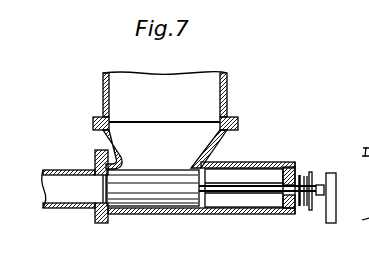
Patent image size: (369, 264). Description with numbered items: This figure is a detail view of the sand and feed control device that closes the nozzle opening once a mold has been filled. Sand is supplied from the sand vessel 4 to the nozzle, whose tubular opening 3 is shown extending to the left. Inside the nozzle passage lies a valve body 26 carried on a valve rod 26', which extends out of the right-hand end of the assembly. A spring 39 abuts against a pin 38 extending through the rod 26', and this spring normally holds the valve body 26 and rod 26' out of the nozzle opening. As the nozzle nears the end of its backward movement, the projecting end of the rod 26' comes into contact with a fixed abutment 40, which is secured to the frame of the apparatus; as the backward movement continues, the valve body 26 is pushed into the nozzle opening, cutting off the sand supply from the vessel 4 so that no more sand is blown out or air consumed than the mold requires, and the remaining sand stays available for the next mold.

The tube 3 is at (72, 199).
The sand vessel 4 is at (165, 120).
The valve body 26 is at (153, 207).
The valve rod 26' is at (265, 188).
The pin 38 is at (304, 180).
The spring 39 is at (302, 207).
The fixed abutment 40 is at (330, 215).